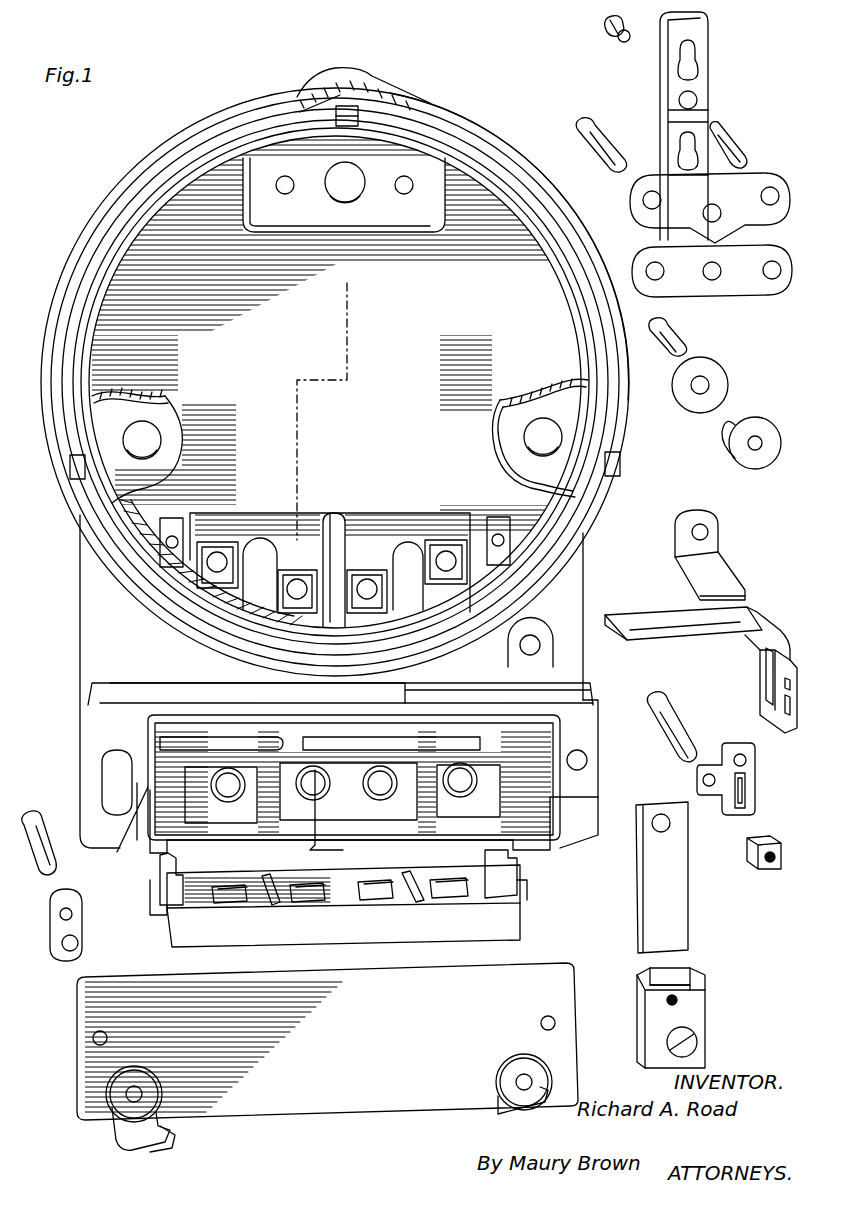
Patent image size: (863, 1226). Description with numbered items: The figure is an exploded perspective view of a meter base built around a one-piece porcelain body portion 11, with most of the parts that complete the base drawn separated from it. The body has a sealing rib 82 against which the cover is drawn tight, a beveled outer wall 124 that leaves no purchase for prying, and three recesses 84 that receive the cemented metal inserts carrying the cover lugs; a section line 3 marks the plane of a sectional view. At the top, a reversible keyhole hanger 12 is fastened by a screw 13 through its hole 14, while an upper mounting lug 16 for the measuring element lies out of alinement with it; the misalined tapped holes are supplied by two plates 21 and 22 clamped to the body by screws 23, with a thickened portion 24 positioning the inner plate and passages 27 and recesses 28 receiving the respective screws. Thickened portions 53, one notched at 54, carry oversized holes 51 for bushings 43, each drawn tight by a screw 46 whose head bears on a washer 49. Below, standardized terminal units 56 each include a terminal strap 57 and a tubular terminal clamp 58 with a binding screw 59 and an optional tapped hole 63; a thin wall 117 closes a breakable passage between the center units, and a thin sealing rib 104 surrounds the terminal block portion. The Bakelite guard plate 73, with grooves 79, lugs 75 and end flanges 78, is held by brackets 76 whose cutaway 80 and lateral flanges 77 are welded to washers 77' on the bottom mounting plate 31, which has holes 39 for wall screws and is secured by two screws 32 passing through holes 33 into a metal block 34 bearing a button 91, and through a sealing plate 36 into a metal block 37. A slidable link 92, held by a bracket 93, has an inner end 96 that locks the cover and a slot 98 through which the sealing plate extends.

The body portion 11 is at (125, 190).
The sealing rib 82 is at (130, 242).
The beveled outer wall 124 is at (510, 165).
The hole in hanger 14 is at (340, 20).
The upper mounting lug 16 is at (186, 95).
The recesses 84 is at (352, 108).
The thickened portion 24 is at (385, 215).
The passages 27 is at (287, 194).
The recesses 28 is at (345, 202).
The thickened portions 53 is at (160, 388).
The notch 54 is at (502, 395).
The oversized holes 51 is at (150, 440).
The section line 3 is at (475, 415).
The thin wall 117 is at (335, 622).
The sealing rib 104 is at (575, 830).
The holes in porcelain 33 is at (102, 770).
The guard plate 73 is at (343, 906).
The grooves 79 is at (267, 876).
The lugs 75 is at (160, 878).
The flanges 78 is at (152, 902).
The bottom mounting plate 31 is at (262, 1118).
The lateral flanges 77 is at (335, 1107).
The washers 77' is at (263, 1105).
The holes 39 is at (143, 1098).
The brackets 76 is at (125, 1145).
The cutaway 80 is at (172, 1145).
The screws 32 is at (38, 870).
The metal block 34 is at (50, 930).
The button 91 is at (64, 952).
The screw 13 is at (622, 42).
The keyhole hanger 12 is at (708, 42).
The screws 23 is at (600, 140).
The plate 22 is at (755, 222).
The plate 21 is at (748, 290).
The screw 46 is at (672, 330).
The washer 49 is at (715, 372).
The bushing 43 is at (758, 418).
The bracket 93 is at (722, 568).
The inner end of link 96 is at (620, 618).
The slidable link 92 is at (757, 612).
The slot 98 is at (765, 668).
The sealing plate 36 is at (755, 768).
The metal block 37 is at (762, 870).
The terminal strap 57 is at (690, 905).
The terminal units 56 is at (706, 978).
The tapped hole 63 is at (678, 1000).
The tubular terminal clamp 58 is at (695, 1024).
The binding screw 59 is at (698, 1044).